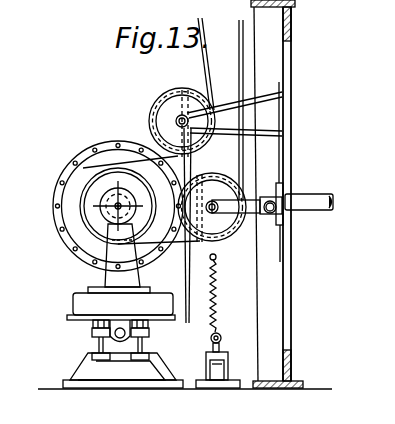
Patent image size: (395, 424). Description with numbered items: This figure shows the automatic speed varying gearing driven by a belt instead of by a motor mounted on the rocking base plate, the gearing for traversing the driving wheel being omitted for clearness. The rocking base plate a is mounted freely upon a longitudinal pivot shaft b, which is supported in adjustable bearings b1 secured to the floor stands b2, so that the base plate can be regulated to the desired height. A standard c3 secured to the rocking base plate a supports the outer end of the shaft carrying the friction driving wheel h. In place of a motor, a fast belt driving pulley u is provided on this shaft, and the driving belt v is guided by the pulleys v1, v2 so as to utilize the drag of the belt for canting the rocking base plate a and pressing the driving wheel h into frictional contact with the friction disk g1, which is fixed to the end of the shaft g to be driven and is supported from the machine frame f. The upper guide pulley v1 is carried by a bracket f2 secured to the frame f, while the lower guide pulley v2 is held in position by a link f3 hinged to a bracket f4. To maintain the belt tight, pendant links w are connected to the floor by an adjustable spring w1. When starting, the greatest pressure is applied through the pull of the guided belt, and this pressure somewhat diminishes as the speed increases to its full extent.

The rocking base plate a is at (73, 308).
The longitudinal pivot shaft b is at (128, 337).
The adjustable bearings b1 is at (95, 331).
The floor stands b2 is at (93, 365).
The standard / column c3 is at (110, 281).
The driving wheel h is at (66, 165).
The fast belt driving pulley u is at (82, 192).
The driving belt v is at (238, 48).
The upper guide pulley v1 is at (150, 102).
The lower guide pulley v2 is at (222, 248).
The machine frame f is at (283, 29).
The bracket f2 is at (248, 114).
The link f3 is at (254, 197).
The bracket f4 is at (277, 215).
The shaft to be driven g is at (323, 196).
The rotary disk g1 is at (187, 305).
The pendant links w is at (230, 282).
The adjustable spring w1 is at (223, 301).